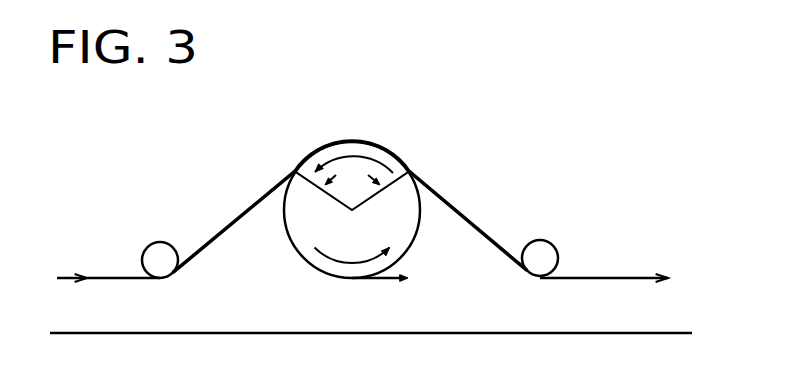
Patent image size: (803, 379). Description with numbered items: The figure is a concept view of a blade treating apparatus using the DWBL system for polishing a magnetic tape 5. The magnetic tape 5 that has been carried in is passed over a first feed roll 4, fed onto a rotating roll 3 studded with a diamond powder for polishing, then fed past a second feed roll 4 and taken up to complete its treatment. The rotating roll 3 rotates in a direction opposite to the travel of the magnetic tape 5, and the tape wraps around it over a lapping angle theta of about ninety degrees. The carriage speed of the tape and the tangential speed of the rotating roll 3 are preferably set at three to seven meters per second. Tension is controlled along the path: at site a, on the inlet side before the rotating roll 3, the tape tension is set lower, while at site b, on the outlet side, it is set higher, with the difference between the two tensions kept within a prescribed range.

The rotating roll 3 is at (400, 207).
The feed roll 4 is at (162, 263).
The magnetic tape 5 is at (610, 276).
The site a is at (228, 228).
The site b is at (475, 222).